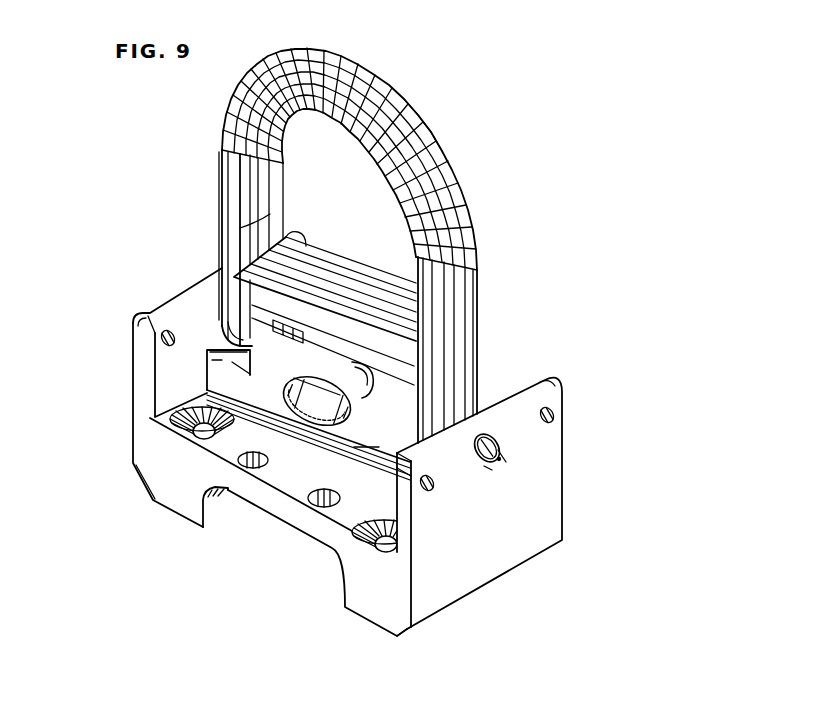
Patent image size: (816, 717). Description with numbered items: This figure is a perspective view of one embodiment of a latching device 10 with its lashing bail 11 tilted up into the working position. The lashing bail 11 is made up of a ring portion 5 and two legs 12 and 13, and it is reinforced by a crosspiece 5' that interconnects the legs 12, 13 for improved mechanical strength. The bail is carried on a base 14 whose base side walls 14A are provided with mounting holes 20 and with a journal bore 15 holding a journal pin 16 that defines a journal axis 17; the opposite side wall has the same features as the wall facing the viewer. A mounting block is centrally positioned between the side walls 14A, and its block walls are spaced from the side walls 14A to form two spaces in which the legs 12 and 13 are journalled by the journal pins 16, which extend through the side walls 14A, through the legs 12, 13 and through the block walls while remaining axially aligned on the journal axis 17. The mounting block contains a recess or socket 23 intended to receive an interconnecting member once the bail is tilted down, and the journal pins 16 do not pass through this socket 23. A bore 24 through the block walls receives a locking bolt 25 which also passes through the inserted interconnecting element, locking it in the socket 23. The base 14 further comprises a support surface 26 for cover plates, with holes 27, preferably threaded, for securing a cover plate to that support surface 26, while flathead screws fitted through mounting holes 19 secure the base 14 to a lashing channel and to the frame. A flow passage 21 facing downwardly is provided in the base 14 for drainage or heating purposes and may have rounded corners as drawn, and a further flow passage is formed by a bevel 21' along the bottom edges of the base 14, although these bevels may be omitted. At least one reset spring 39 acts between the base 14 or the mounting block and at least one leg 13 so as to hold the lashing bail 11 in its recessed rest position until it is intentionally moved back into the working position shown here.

The latching device 10 is at (571, 80).
The ring portion 5 is at (348, 239).
The crosspiece 5' is at (325, 283).
The lashing bail 11 is at (410, 103).
The leg 12 is at (432, 432).
The leg 13 is at (248, 328).
The base 14 is at (465, 553).
The base side wall 14A is at (140, 337).
The journal bore 15 is at (302, 333).
The journal pin 16 is at (487, 465).
The journal axis 17 is at (507, 464).
The mounting hole 19 is at (193, 427).
The mounting hole 20 is at (163, 341).
The flow passage 21 is at (209, 527).
The bevel 21' is at (279, 563).
The recess or socket 23 is at (238, 333).
The bore 24 is at (382, 365).
The locking bolt 25 is at (328, 400).
The support surface 26 is at (295, 482).
The hole 27 is at (322, 508).
The reset spring 39 is at (228, 188).